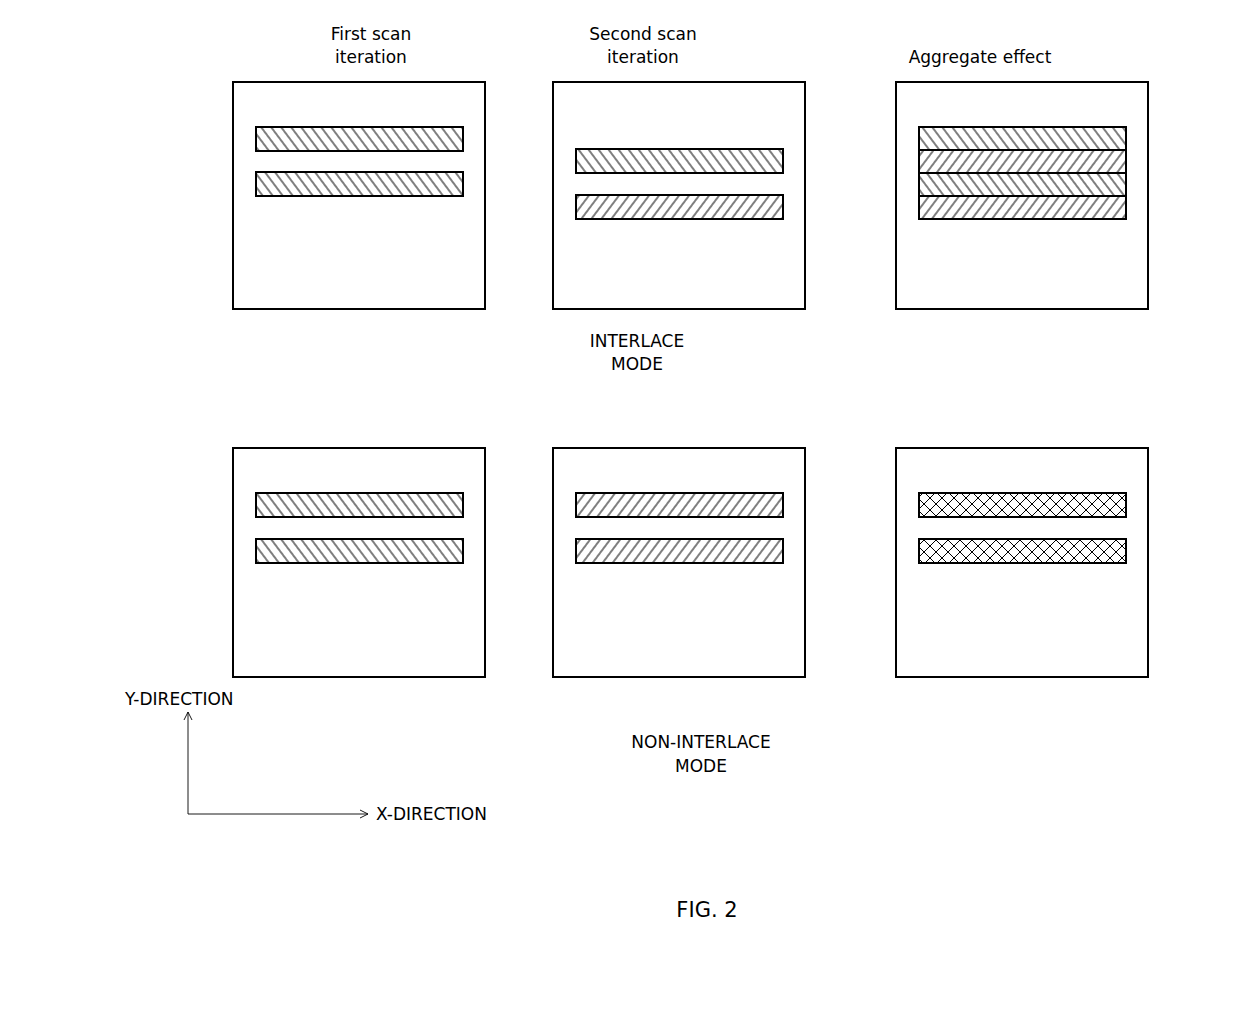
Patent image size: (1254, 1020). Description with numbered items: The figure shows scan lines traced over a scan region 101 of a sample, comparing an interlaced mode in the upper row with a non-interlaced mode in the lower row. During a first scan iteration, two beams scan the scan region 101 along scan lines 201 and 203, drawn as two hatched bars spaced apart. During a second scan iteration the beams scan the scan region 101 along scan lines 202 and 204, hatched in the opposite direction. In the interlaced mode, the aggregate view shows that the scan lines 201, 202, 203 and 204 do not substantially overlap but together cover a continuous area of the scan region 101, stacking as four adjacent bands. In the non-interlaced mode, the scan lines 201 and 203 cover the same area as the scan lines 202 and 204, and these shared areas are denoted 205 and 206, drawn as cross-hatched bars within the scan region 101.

The scan region 101 is at (342, 284).
The scan line 201 is at (256, 150).
The scan line 202 is at (577, 172).
The scan line 203 is at (266, 197).
The scan line 204 is at (577, 219).
The same area covered by scan lines 205 is at (919, 502).
The same area covered by scan lines 206 is at (919, 548).